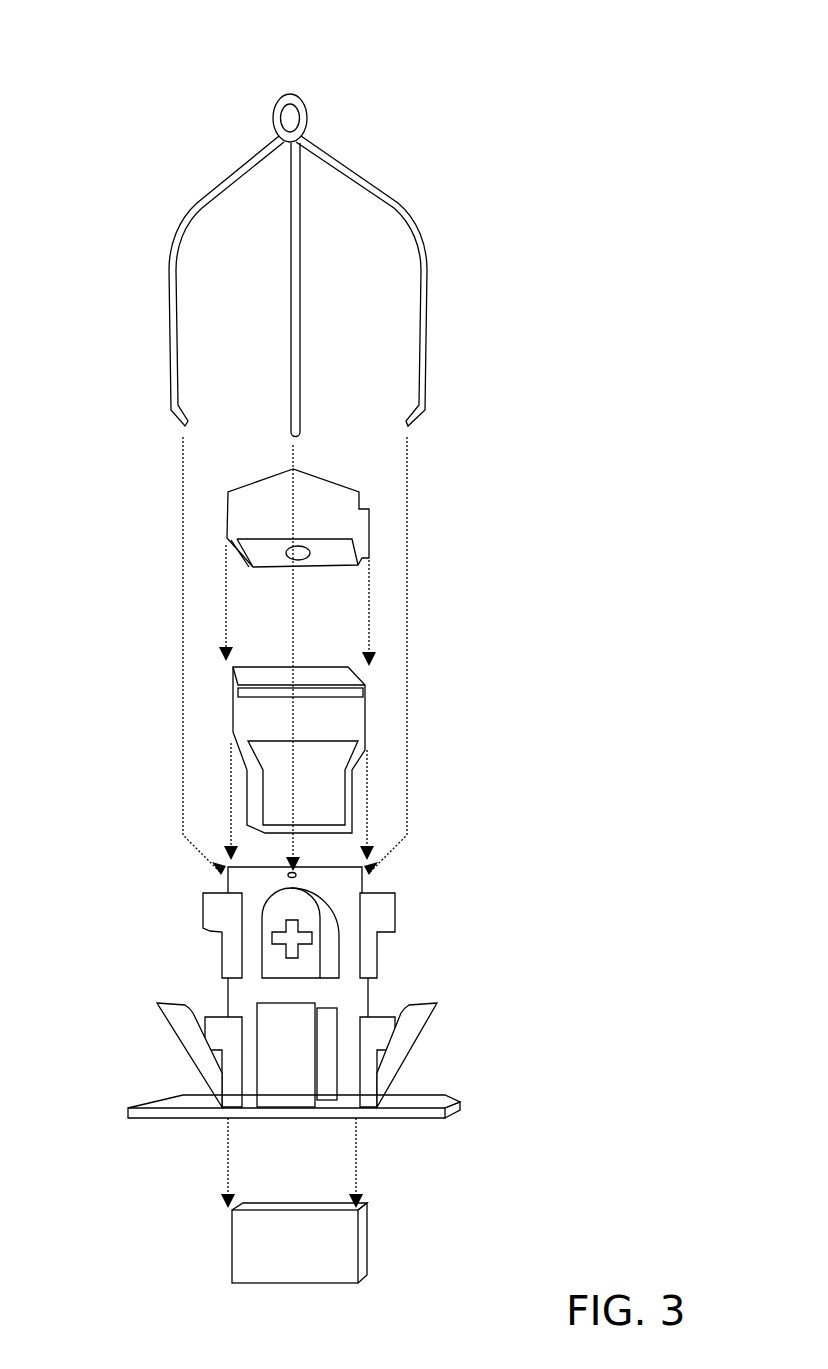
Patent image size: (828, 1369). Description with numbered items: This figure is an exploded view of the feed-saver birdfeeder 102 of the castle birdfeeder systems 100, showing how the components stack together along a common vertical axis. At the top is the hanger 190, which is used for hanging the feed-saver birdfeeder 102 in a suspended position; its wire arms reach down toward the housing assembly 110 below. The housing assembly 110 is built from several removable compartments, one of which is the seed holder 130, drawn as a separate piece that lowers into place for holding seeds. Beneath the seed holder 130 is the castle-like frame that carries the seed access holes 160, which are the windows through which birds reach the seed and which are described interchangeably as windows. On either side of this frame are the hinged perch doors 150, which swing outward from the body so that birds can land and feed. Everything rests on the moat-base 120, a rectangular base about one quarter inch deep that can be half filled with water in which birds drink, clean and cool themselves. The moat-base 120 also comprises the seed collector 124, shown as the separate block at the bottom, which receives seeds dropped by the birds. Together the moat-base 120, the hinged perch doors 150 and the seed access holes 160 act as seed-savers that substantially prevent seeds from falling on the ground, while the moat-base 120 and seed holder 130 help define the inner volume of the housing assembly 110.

The castle birdfeeder systems 100 is at (522, 288).
The feed-saver birdfeeder 102 is at (547, 333).
The housing assembly 110 is at (567, 378).
The moat-base 120 is at (458, 1093).
The seed collector 124 is at (300, 1256).
The seed holder 130 is at (353, 718).
The hinged perch doors 150 is at (176, 1001).
The seed access holes 160 is at (394, 886).
The hanger 190 is at (283, 88).